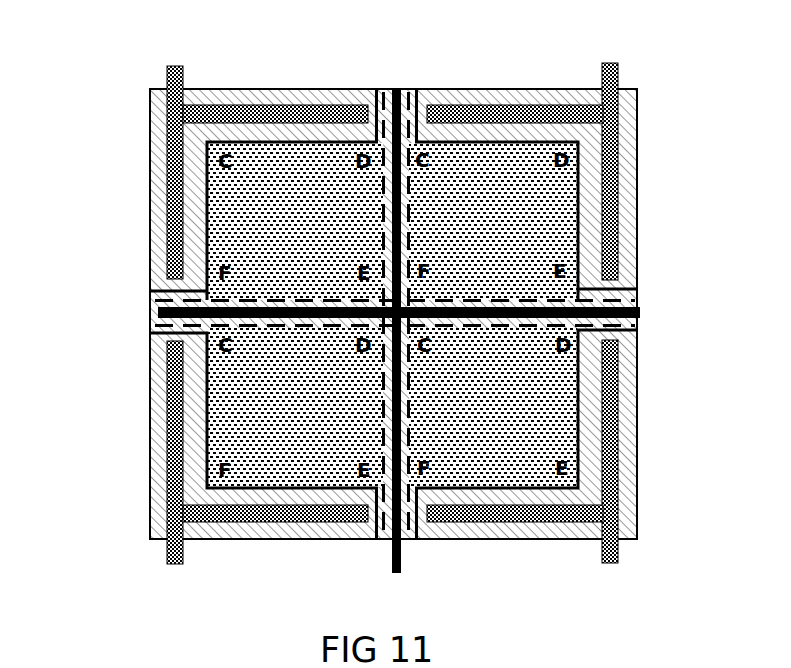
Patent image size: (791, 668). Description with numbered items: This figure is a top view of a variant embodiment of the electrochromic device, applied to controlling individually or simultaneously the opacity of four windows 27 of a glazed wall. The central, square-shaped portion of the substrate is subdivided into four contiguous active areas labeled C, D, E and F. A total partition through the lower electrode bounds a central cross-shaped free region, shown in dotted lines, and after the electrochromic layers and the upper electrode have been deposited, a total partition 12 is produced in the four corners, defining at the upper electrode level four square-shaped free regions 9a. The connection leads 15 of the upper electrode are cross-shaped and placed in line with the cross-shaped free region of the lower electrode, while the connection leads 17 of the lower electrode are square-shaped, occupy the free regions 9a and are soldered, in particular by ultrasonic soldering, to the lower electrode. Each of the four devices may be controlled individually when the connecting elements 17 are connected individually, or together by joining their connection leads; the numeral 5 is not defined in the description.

The gate insulating film 5 is at (240, 336).
The square-shaped free region 9a is at (587, 223).
The total partition 12 is at (535, 267).
The connection leads of the upper electrode 15 is at (400, 137).
The connection leads of the lower electrode 17 is at (252, 113).
The window 27 is at (487, 175).